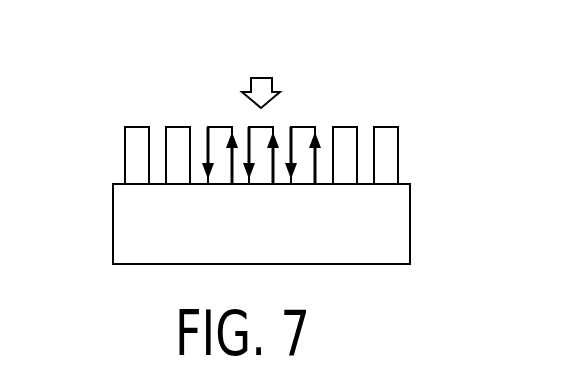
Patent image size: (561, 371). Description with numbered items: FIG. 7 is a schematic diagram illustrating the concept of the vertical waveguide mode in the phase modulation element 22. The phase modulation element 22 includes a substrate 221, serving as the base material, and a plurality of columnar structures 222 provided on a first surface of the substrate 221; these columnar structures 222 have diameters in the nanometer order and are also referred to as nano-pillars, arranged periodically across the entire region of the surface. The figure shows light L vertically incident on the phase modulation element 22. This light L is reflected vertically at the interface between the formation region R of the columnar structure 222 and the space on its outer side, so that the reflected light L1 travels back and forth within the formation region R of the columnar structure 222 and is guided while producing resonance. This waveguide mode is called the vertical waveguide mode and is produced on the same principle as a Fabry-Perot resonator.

The phase modulation element 22 is at (328, 98).
The substrate 221 is at (397, 216).
The columnar structure 222 is at (392, 146).
The formation region R is at (106, 146).
The light L is at (262, 88).
The reflected light L1 is at (197, 127).